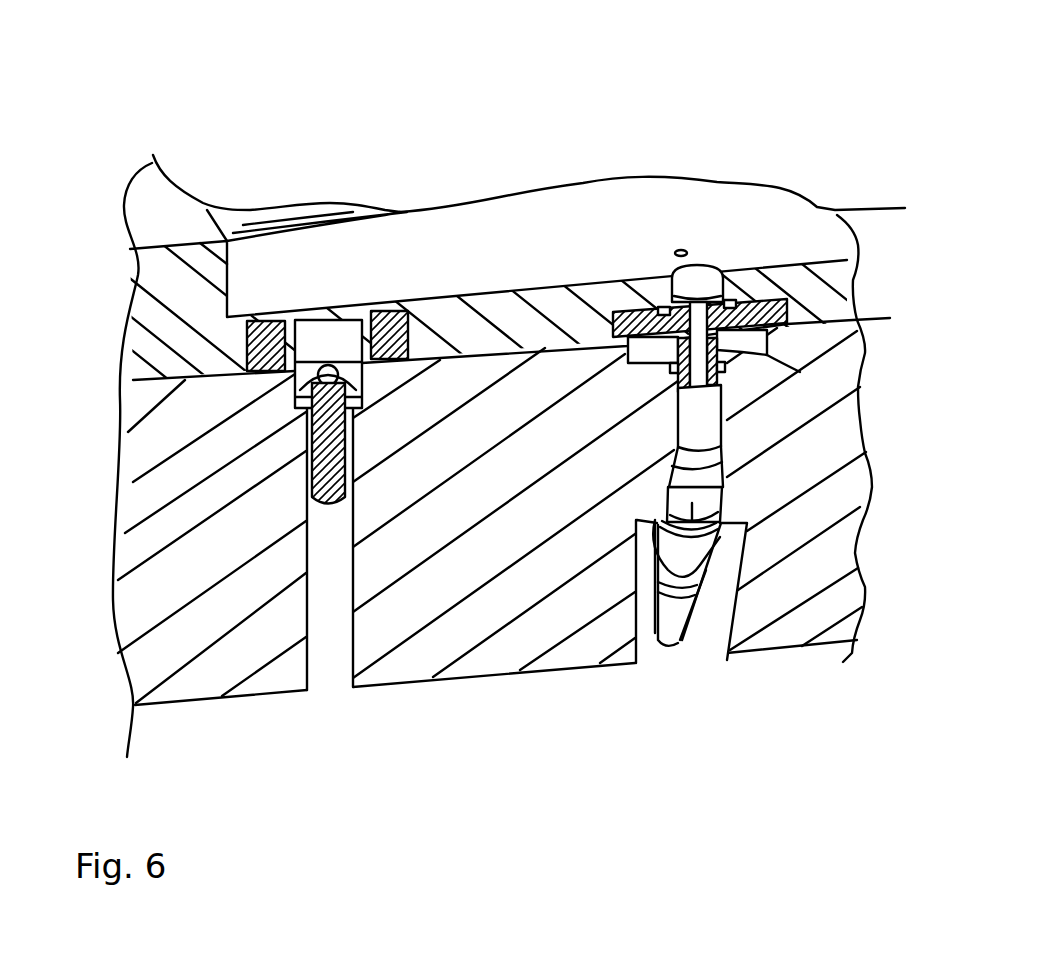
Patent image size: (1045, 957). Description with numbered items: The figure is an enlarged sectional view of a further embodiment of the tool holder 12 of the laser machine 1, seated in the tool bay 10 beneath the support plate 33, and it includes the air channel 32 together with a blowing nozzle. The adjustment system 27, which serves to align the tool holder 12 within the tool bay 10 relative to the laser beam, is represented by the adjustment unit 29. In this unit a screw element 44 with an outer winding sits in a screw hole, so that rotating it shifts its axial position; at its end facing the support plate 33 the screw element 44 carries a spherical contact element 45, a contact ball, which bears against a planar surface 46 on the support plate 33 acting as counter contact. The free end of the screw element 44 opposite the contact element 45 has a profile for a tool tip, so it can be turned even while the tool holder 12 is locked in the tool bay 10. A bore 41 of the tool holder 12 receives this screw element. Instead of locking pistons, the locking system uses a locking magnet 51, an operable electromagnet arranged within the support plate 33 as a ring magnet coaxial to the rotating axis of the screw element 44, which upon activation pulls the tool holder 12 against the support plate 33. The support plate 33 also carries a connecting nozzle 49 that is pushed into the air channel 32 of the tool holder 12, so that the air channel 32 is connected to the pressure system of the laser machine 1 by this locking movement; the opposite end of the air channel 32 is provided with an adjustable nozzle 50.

The laser machine 1 is at (790, 73).
The tool bay 10 is at (195, 475).
The tool holder 12 is at (817, 640).
The adjustment system 27 is at (406, 632).
The adjustment unit 29 is at (290, 606).
The air channel 32 is at (717, 428).
The support plate 33 is at (848, 300).
The bore 41 is at (352, 665).
The screw element 44 is at (345, 488).
The contact element 45 is at (340, 382).
The planar surface 46 is at (298, 372).
The connecting nozzle 49 is at (745, 352).
The nozzle 50 is at (683, 636).
The locking magnet 51 is at (402, 328).